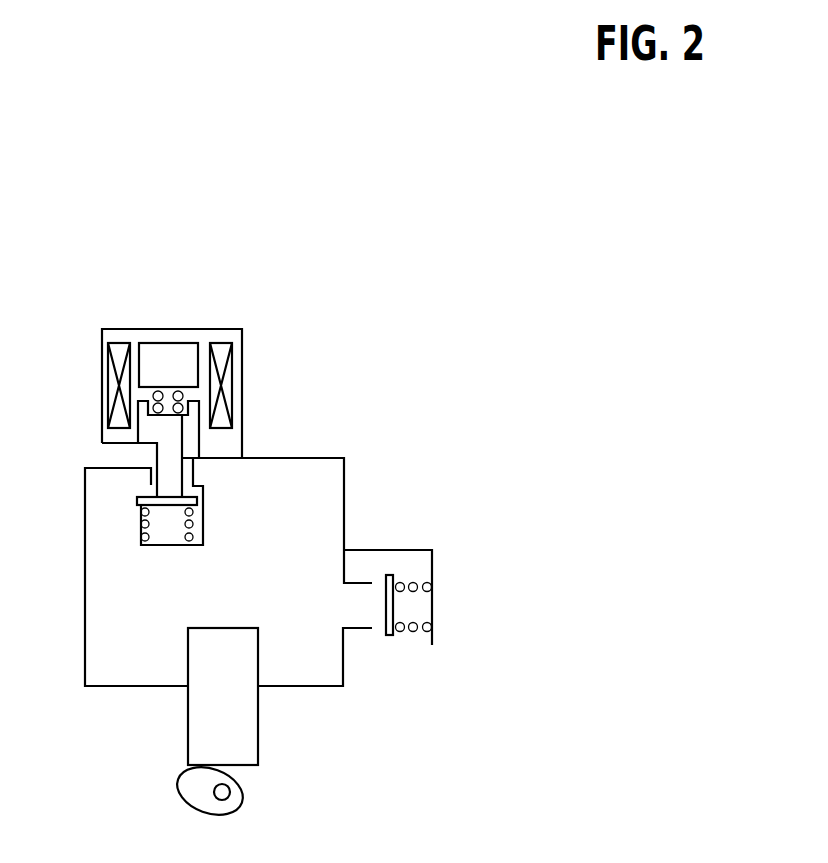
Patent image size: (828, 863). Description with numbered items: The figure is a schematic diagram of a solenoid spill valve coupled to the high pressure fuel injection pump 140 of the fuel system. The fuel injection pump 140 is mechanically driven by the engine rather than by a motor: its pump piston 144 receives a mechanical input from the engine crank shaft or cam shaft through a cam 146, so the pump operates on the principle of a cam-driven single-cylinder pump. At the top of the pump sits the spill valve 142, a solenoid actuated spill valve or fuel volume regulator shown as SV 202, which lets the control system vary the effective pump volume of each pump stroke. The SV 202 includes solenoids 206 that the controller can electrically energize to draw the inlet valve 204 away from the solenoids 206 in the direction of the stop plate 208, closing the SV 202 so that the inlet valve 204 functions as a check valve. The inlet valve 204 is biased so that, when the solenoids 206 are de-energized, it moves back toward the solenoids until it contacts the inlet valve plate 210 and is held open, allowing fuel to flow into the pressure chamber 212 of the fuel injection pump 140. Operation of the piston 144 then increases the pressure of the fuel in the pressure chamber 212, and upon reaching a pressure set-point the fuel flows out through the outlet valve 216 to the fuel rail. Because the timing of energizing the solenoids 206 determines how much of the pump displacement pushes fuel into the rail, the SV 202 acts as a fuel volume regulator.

The fuel injection pump 140 is at (491, 342).
The spill valve 142 is at (242, 402).
The pump piston 144 is at (258, 750).
The cam 146 is at (242, 803).
The spill valve 202 is at (286, 232).
The inlet valve 204 is at (200, 450).
The solenoids 206 is at (120, 343).
The stop plate 208 is at (203, 505).
The inlet valve plate 210 is at (162, 347).
The pressure chamber 212 is at (153, 599).
The outlet valve 216 is at (390, 573).